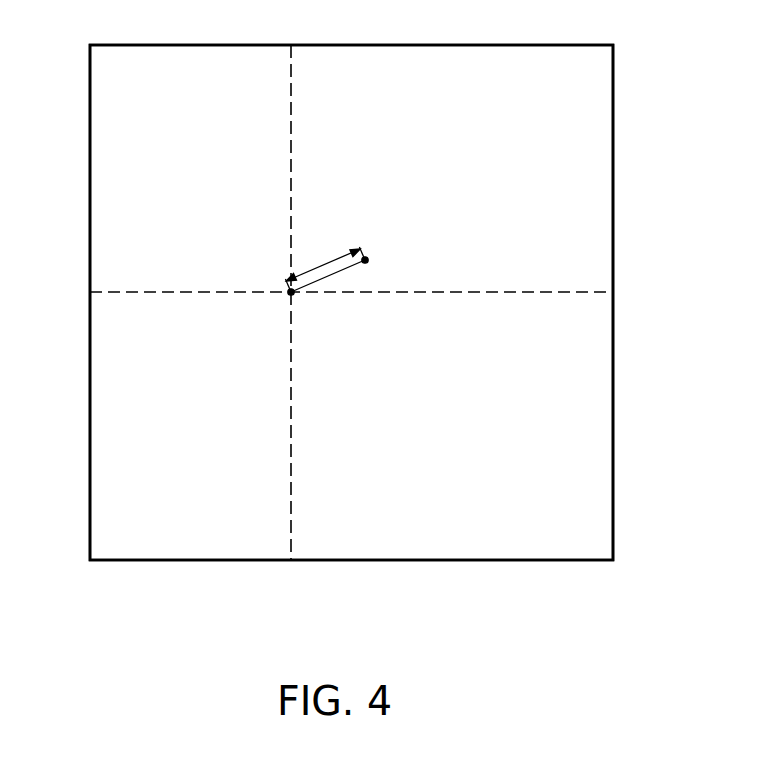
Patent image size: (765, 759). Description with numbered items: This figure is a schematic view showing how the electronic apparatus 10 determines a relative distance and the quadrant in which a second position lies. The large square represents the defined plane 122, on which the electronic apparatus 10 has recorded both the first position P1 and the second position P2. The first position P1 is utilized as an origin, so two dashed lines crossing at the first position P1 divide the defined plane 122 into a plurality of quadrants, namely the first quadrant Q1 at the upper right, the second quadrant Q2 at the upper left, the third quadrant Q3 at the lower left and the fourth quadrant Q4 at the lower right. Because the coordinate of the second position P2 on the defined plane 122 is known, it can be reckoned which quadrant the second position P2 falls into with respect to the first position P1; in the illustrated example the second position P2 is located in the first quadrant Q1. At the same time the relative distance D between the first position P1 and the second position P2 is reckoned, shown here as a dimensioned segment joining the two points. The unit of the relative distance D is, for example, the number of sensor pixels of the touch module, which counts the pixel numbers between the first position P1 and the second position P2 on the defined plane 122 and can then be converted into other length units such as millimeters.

The electronic apparatus 10 is at (687, 638).
The defined plane 122 is at (611, 251).
The first quadrant Q1 is at (597, 101).
The second quadrant Q2 is at (100, 101).
The third quadrant Q3 is at (100, 502).
The fourth quadrant Q4 is at (597, 502).
The first position P1 is at (275, 281).
The second position P2 is at (380, 262).
The relative distance D is at (325, 265).